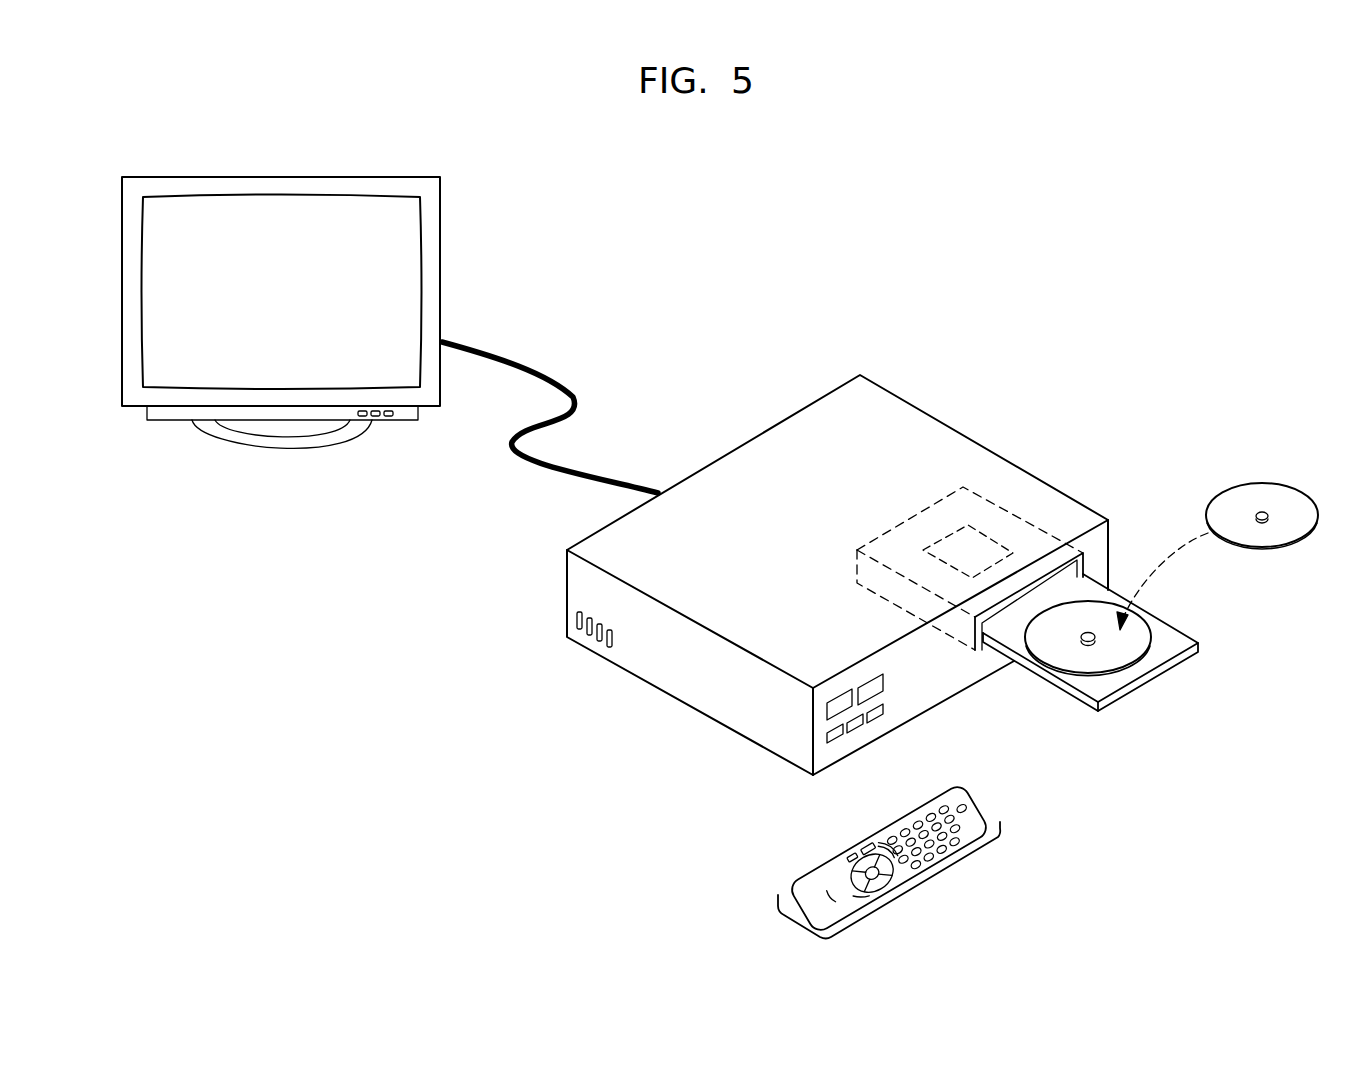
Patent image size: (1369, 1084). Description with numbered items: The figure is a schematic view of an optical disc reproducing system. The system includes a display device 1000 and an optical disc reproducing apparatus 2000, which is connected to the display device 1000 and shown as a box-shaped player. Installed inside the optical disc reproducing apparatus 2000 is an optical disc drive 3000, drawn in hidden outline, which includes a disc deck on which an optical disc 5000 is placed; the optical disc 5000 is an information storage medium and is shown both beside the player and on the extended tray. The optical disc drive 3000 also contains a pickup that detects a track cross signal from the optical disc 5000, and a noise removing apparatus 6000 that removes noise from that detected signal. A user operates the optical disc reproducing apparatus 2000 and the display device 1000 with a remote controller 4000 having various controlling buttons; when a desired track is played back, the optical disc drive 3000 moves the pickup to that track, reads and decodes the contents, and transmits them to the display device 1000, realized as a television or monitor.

The display device 1000 is at (442, 255).
The optical disc reproducing apparatus 2000 is at (784, 420).
The optical disc drive 3000 is at (1005, 508).
The remote controller 4000 is at (921, 888).
The optical disc 5000 is at (1264, 482).
The noise removing apparatus 6000 is at (965, 550).